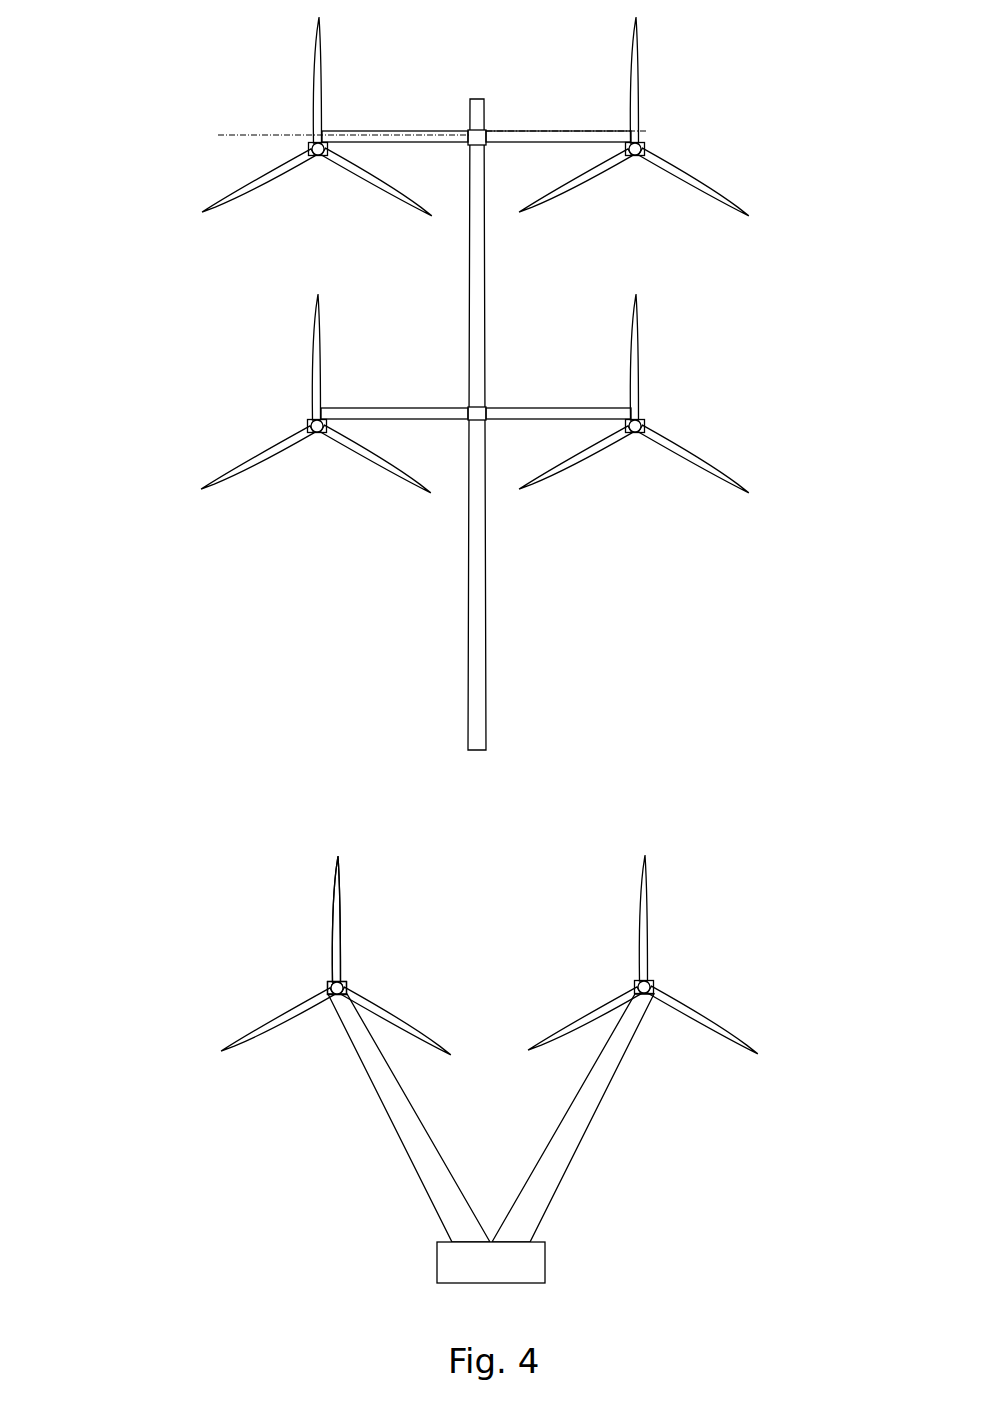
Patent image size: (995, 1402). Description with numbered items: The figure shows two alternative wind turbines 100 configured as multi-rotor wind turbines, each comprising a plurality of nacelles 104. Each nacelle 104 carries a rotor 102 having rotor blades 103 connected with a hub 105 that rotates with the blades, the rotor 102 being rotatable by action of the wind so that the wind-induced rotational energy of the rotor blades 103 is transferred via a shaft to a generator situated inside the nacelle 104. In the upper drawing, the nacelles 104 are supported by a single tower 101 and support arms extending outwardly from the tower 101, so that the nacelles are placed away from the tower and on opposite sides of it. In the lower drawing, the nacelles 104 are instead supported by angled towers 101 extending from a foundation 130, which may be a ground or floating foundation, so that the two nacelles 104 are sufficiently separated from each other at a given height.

The wind turbine 100 is at (119, 101).
The tower 101 is at (465, 602).
The rotor 102 is at (657, 137).
The rotor blade 103 is at (750, 203).
The nacelle 104 is at (298, 425).
The hub 105 is at (653, 419).
The foundation 130 is at (548, 1255).